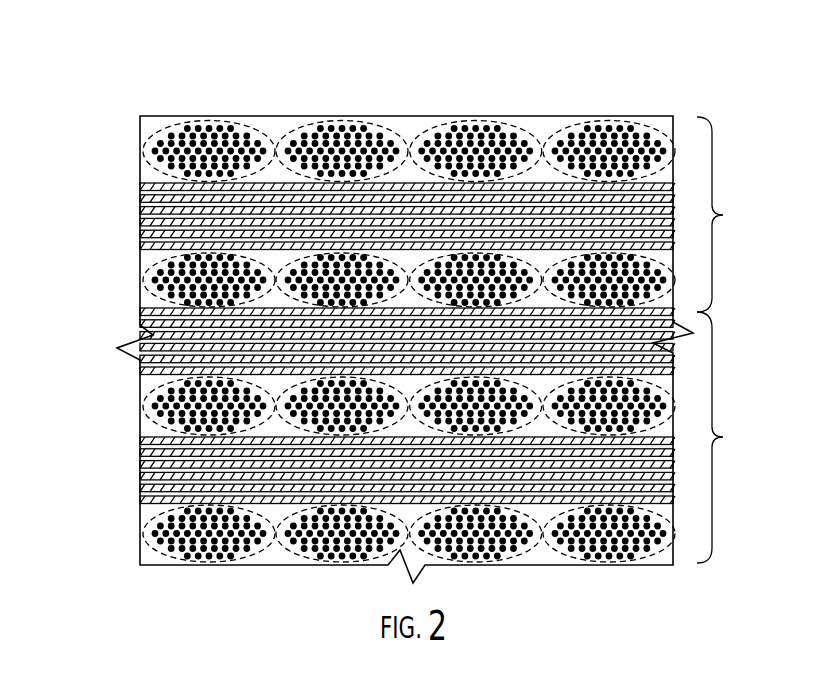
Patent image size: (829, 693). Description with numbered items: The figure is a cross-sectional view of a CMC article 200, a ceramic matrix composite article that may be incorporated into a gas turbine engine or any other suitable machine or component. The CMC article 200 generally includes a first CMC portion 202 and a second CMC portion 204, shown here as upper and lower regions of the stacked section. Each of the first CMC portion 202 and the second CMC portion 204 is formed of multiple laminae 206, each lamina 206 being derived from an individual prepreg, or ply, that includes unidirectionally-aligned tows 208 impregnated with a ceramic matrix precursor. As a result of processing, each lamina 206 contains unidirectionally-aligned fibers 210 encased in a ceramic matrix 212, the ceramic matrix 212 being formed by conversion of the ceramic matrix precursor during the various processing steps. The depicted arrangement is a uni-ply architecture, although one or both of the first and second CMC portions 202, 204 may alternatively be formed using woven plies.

The CMC article 200 is at (100, 78).
The first CMC portion 202 is at (450, 437).
The second CMC portion 204 is at (412, 177).
The lamina 206 is at (158, 208).
The tow 208 is at (400, 137).
The fiber 210 is at (337, 138).
The ceramic matrix 212 is at (543, 138).